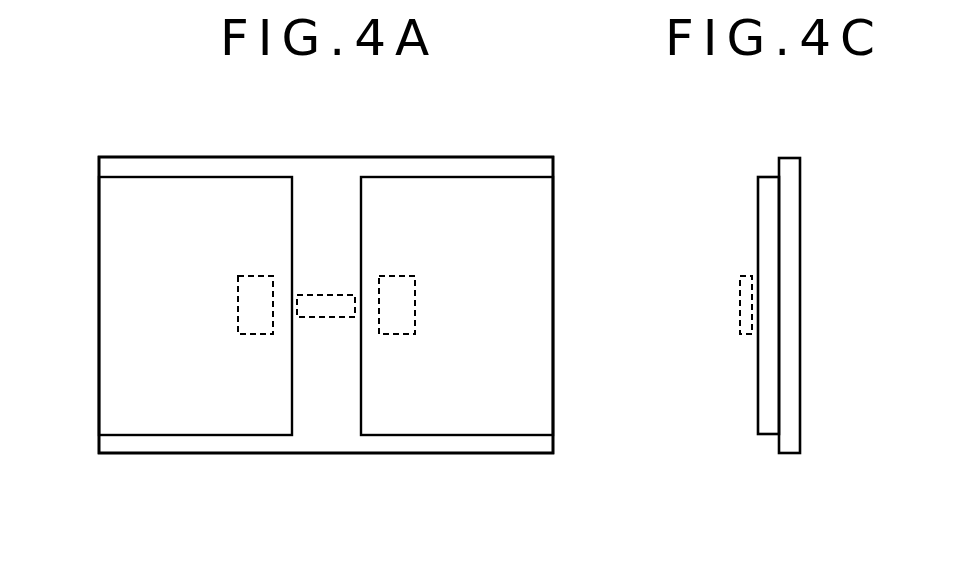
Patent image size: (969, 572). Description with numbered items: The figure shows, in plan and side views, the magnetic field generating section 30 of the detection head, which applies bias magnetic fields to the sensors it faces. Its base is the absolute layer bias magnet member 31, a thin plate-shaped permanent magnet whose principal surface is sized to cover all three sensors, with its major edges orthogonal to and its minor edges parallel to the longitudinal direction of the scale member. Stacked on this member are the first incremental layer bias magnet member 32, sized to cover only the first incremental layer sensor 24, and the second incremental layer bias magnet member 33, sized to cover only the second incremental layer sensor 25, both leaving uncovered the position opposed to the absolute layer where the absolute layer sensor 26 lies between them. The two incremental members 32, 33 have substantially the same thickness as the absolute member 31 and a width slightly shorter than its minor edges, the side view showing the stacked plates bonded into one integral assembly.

In FIG. 4A, the magnetic field generating section 30 is at (620, 130).
In FIG. 4A, the absolute layer bias magnet member 31 is at (226, 440).
In FIG. 4C, the absolute layer bias magnet member 31 is at (790, 222).
In FIG. 4A, the first incremental layer bias magnet member 32 is at (122, 373).
In FIG. 4A, the second incremental layer bias magnet member 33 is at (520, 371).
In FIG. 4C, the second incremental layer bias magnet member 33 is at (773, 218).
In FIG. 4A, the first incremental layer sensor 24 is at (251, 302).
In FIG. 4A, the second incremental layer sensor 25 is at (398, 301).
In FIG. 4C, the second incremental layer sensor 25 is at (748, 303).
In FIG. 4A, the absolute layer sensor 26 is at (325, 306).